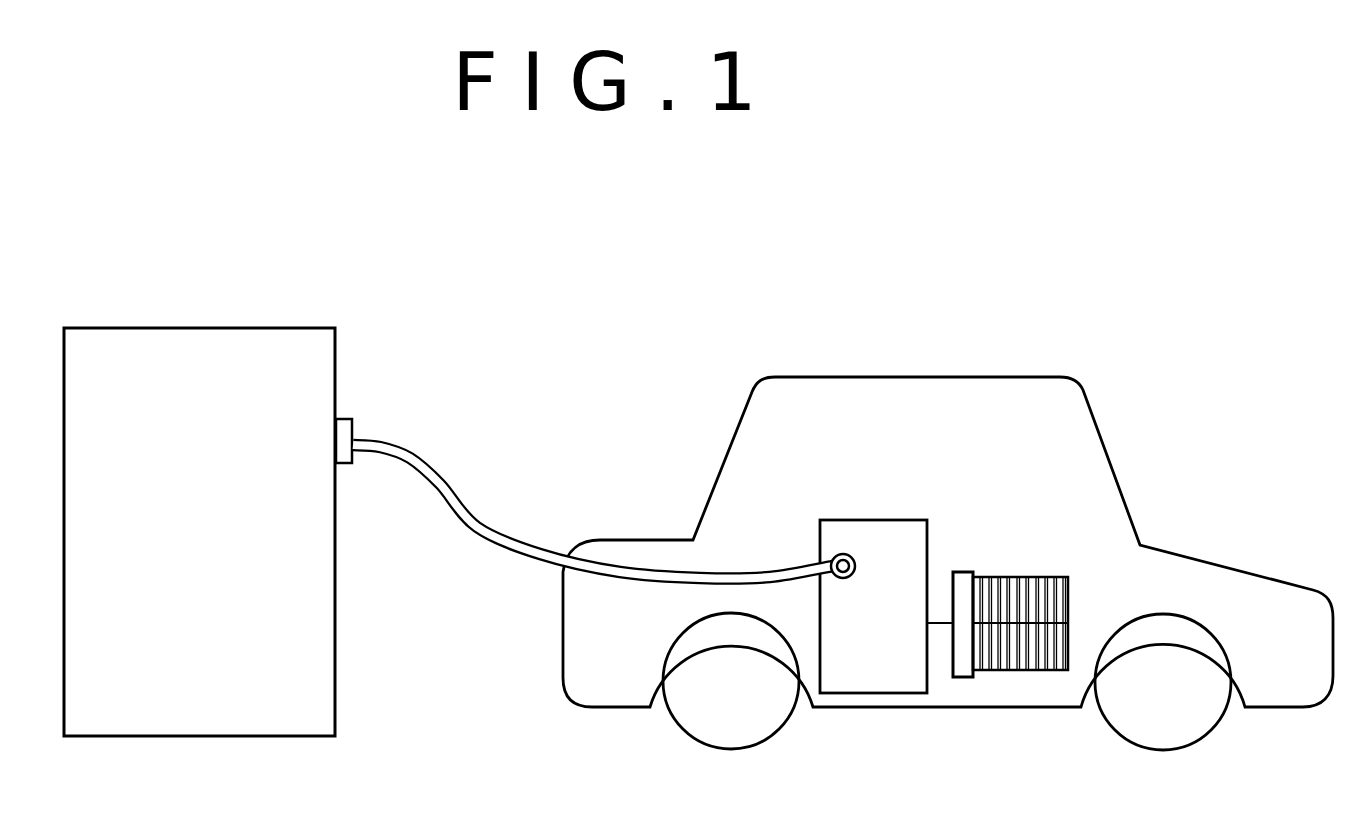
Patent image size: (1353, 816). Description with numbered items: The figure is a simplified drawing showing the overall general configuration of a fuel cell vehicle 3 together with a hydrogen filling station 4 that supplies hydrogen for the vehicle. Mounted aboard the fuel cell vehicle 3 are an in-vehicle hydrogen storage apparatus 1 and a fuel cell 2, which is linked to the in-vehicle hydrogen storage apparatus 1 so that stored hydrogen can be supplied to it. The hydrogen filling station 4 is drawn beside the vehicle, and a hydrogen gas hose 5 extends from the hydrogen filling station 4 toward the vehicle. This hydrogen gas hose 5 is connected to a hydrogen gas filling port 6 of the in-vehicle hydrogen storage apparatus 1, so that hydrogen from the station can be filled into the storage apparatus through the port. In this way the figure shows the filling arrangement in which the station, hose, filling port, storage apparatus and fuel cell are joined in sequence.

The in-vehicle hydrogen storage apparatus 1 is at (912, 520).
The fuel cell 2 is at (1040, 577).
The fuel cell vehicle 3 is at (1084, 389).
The hydrogen filling station 4 is at (335, 328).
The hydrogen gas hose 5 is at (477, 518).
The hydrogen gas filling port 6 is at (848, 579).